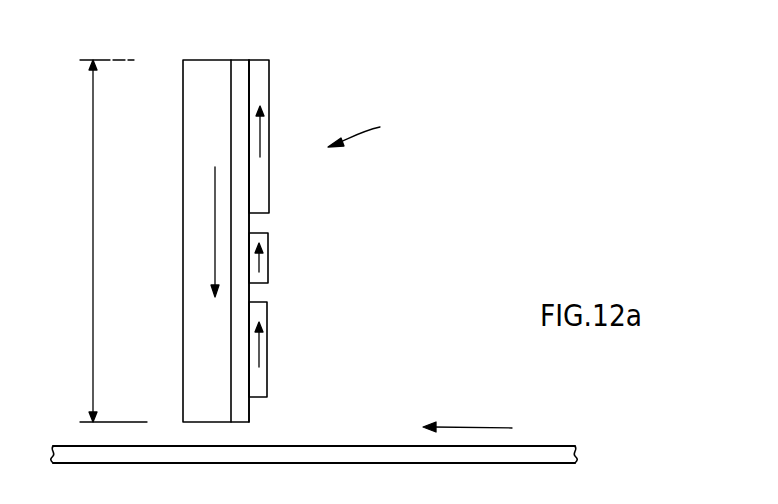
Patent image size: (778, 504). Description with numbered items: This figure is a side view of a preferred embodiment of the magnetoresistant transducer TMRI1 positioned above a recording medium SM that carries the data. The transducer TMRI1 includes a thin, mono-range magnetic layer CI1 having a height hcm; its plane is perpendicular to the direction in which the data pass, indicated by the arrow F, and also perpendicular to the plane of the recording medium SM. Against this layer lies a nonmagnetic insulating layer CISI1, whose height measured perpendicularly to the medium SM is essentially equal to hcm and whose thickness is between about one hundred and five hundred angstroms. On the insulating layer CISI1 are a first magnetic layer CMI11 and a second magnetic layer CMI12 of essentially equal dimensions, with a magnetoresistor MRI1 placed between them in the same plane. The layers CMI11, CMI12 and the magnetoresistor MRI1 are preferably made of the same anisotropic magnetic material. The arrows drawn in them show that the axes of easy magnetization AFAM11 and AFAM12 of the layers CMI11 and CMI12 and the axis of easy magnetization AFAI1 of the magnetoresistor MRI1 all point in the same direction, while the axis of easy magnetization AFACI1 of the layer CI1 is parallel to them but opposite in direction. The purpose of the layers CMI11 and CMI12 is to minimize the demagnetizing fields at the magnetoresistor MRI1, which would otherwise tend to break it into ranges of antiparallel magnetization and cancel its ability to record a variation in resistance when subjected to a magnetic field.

The thin mono-range magnetic layer CI1 is at (196, 186).
The nonmagnetic insulating layer CISI1 is at (244, 72).
The first magnetic layer CMI11 is at (262, 92).
The axis of easy magnetization of first magnetic layer AFAM11 is at (260, 157).
The magnetoresistant transducer TMRI1 is at (393, 123).
The axis of easy magnetization of thin magnetic layer AFACI1 is at (213, 262).
The magnetoresistor MRI1 is at (268, 266).
The axis of easy magnetization of magnetoresistor AFAI1 is at (262, 258).
The second magnetic layer CMI12 is at (266, 343).
The axis of easy magnetization of second magnetic layer AFAM12 is at (258, 366).
The height of magnetic layer hcm is at (107, 241).
The direction of data passage F is at (467, 418).
The recording medium SM is at (537, 448).